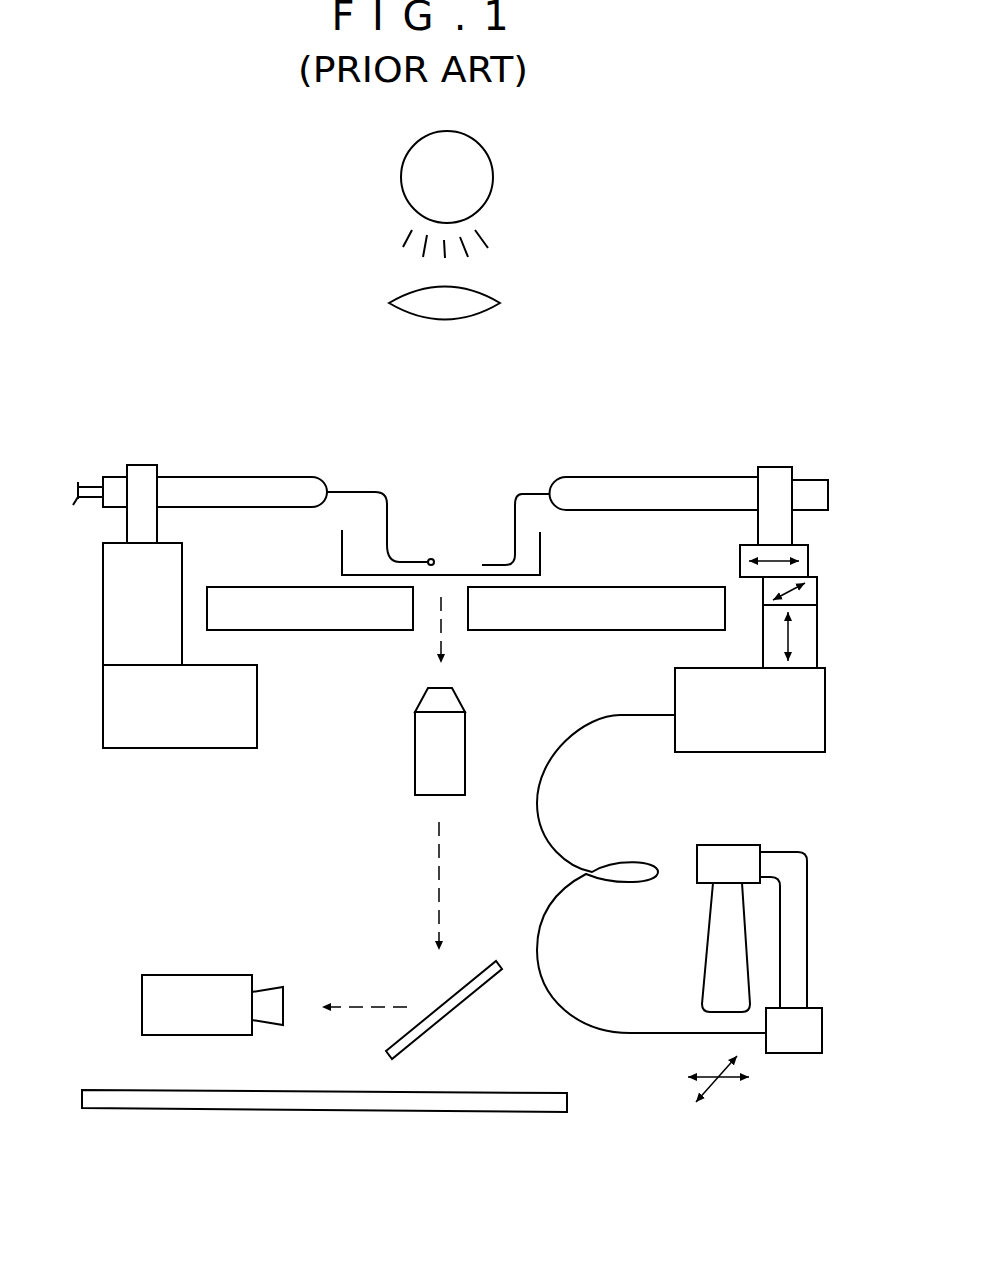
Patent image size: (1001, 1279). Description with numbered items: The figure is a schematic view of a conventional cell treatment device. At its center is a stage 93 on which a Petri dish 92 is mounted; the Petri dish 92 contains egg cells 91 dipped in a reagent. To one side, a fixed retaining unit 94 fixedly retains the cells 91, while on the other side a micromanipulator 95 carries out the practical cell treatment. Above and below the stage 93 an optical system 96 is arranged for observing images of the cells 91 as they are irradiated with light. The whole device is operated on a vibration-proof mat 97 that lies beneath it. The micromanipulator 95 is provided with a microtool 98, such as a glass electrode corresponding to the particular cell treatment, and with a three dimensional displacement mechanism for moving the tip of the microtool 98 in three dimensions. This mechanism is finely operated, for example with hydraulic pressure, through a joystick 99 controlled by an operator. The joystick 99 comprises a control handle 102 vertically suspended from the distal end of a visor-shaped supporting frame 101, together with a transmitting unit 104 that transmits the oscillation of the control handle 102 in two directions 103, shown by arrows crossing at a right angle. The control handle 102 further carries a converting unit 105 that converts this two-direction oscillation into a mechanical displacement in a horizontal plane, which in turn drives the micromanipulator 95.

The egg cells 91 is at (432, 556).
The Petri dish 92 is at (542, 560).
The stage 93 is at (323, 632).
The fixed retaining unit 94 is at (174, 455).
The micromanipulator 95 is at (746, 454).
The optical system 96 is at (407, 325).
The vibration-proof mat 97 is at (482, 1091).
The microtool 98 is at (527, 494).
The joystick 99 is at (675, 834).
The supporting frame 101 is at (783, 852).
The control handle 102 is at (720, 945).
The two directions 103 is at (718, 1083).
The transmitting unit 104 is at (785, 1058).
The converting unit 105 is at (730, 845).